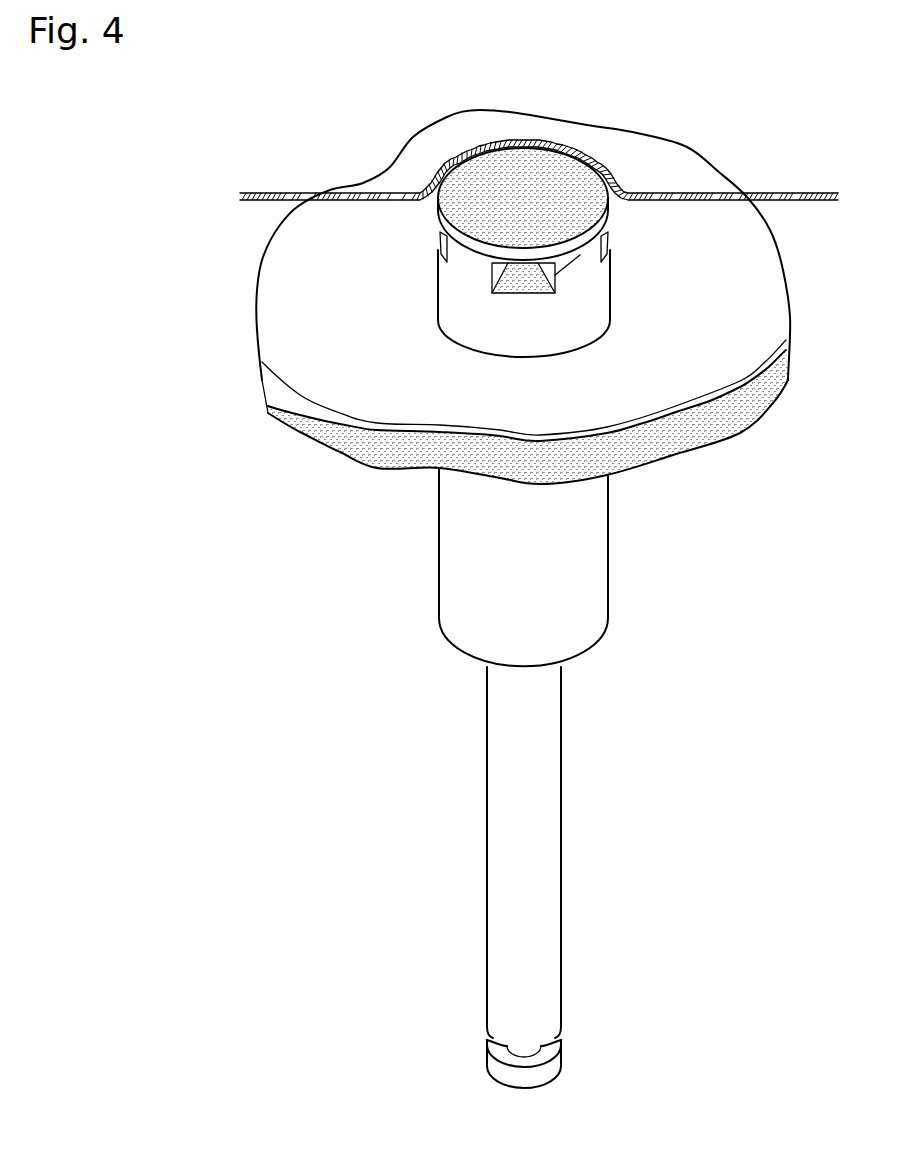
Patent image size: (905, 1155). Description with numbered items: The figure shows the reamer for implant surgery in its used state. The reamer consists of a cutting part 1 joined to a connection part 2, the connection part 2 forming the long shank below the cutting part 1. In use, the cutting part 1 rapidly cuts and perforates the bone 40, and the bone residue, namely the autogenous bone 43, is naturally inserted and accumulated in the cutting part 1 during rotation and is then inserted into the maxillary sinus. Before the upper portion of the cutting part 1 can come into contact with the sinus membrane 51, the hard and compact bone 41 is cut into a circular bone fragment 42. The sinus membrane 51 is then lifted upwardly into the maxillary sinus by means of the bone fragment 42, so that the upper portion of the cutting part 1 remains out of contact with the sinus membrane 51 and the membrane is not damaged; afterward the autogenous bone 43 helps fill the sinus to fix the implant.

The cutting part 1 is at (636, 535).
The connection part 2 is at (578, 914).
The bone 40 is at (364, 462).
The compact bone 41 is at (366, 424).
The bone fragment 42 is at (437, 215).
The autogenous bone 43 is at (538, 296).
The sinus membrane 51 is at (681, 203).